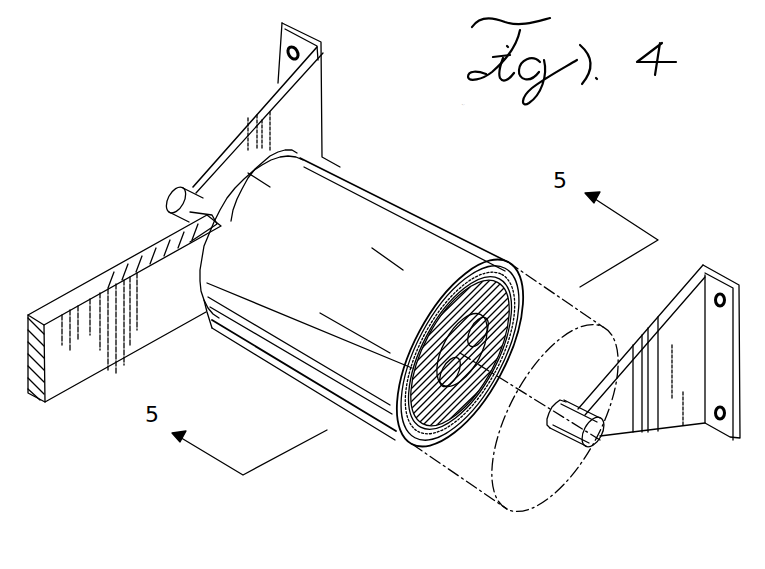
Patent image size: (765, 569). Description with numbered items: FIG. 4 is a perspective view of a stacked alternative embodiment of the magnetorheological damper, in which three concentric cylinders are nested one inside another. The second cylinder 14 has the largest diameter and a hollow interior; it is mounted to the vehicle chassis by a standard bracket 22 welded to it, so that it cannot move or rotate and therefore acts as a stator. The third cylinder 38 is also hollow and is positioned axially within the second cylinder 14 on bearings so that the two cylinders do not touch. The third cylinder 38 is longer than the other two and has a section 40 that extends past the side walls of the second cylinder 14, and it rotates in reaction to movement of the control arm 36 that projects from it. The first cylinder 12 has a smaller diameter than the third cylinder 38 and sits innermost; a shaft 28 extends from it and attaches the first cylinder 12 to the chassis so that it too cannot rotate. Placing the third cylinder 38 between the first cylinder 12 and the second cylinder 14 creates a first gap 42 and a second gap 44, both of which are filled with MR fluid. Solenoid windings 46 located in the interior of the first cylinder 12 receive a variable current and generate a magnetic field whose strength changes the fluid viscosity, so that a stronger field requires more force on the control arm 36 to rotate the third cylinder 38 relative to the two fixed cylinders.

The first cylinder 12 is at (427, 455).
The second cylinder 14 is at (368, 400).
The bracket 22 is at (723, 327).
The shaft 28 is at (163, 190).
The control arm 36 is at (53, 340).
The third cylinder 38 is at (420, 447).
The section 40 is at (230, 190).
The first gap 42 is at (503, 265).
The second gap 44 is at (446, 290).
The solenoid windings 46 is at (403, 297).